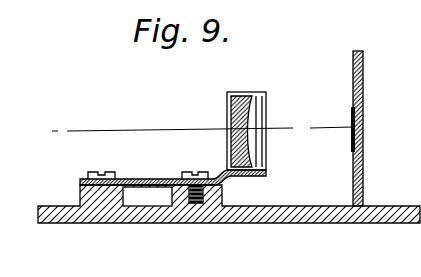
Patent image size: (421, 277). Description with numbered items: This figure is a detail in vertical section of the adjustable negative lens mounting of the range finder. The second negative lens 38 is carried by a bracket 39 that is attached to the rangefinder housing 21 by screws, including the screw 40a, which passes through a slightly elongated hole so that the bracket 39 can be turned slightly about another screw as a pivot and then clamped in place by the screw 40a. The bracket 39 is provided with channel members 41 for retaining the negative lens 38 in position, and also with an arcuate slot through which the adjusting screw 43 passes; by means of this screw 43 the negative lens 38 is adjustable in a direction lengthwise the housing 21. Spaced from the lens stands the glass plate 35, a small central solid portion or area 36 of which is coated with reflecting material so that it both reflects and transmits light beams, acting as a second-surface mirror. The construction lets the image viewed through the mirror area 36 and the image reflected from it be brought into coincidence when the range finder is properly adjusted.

The housing 21 is at (241, 215).
The glass plate 35 is at (365, 86).
The central solid portion or area 36 is at (351, 108).
The second negative lens 38 is at (241, 96).
The bracket 39 is at (151, 178).
The screw 40a is at (109, 171).
The channel members 41 is at (266, 151).
The adjusting screw 43 is at (197, 170).